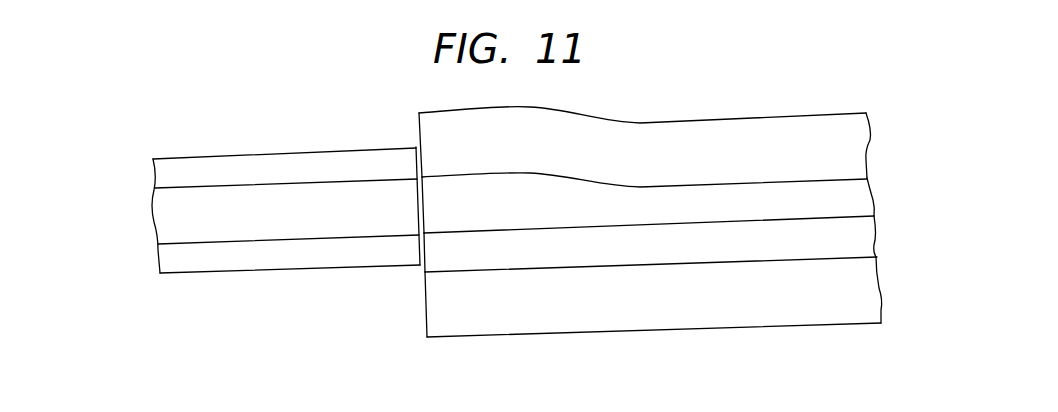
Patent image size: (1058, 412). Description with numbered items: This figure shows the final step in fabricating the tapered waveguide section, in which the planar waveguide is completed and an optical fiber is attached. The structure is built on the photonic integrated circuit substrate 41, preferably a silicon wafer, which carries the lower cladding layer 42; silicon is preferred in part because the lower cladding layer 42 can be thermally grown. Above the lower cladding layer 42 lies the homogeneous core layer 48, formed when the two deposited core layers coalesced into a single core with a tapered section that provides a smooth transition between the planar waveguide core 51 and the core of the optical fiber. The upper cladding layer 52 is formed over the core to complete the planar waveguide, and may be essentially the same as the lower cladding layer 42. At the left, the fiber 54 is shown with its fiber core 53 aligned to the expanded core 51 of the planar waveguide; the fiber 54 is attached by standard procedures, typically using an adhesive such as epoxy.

The photonic integrated circuit substrate 41 is at (882, 306).
The lower cladding layer 42 is at (876, 233).
The homogeneous core layer 48 is at (876, 200).
The planar waveguide core 51 is at (498, 186).
The upper cladding layer 52 is at (708, 128).
The fiber core 53 is at (152, 215).
The fiber 54 is at (265, 272).